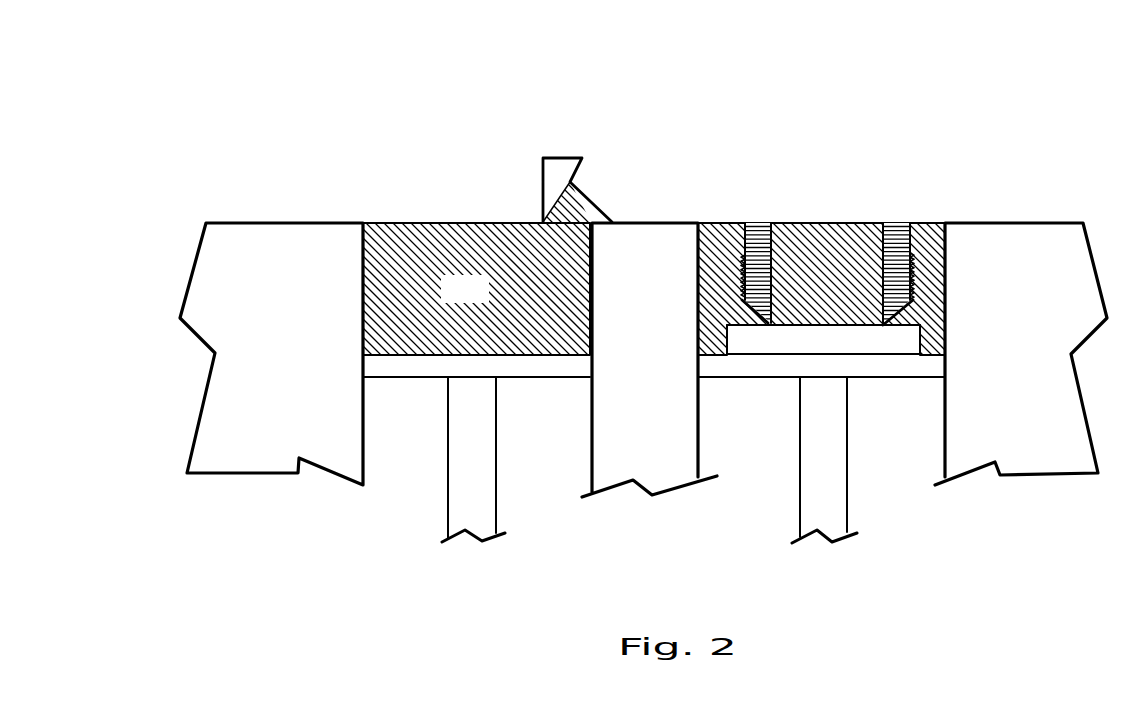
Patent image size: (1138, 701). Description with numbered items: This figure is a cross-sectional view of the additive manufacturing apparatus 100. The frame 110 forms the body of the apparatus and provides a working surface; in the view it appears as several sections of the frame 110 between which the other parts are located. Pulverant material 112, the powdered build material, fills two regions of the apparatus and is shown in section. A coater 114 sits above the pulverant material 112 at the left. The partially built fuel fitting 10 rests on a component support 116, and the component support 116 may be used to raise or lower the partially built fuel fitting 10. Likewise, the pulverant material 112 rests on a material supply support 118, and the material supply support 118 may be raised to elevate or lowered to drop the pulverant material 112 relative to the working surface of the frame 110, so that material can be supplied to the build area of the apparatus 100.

The additive manufacturing apparatus 100 is at (973, 118).
The frame 110 is at (286, 348).
The pulverant material 112 is at (483, 300).
The coater 114 is at (560, 158).
The component support 116 is at (862, 360).
The material supply support 118 is at (460, 465).
The partially built fuel fitting 10 is at (742, 300).